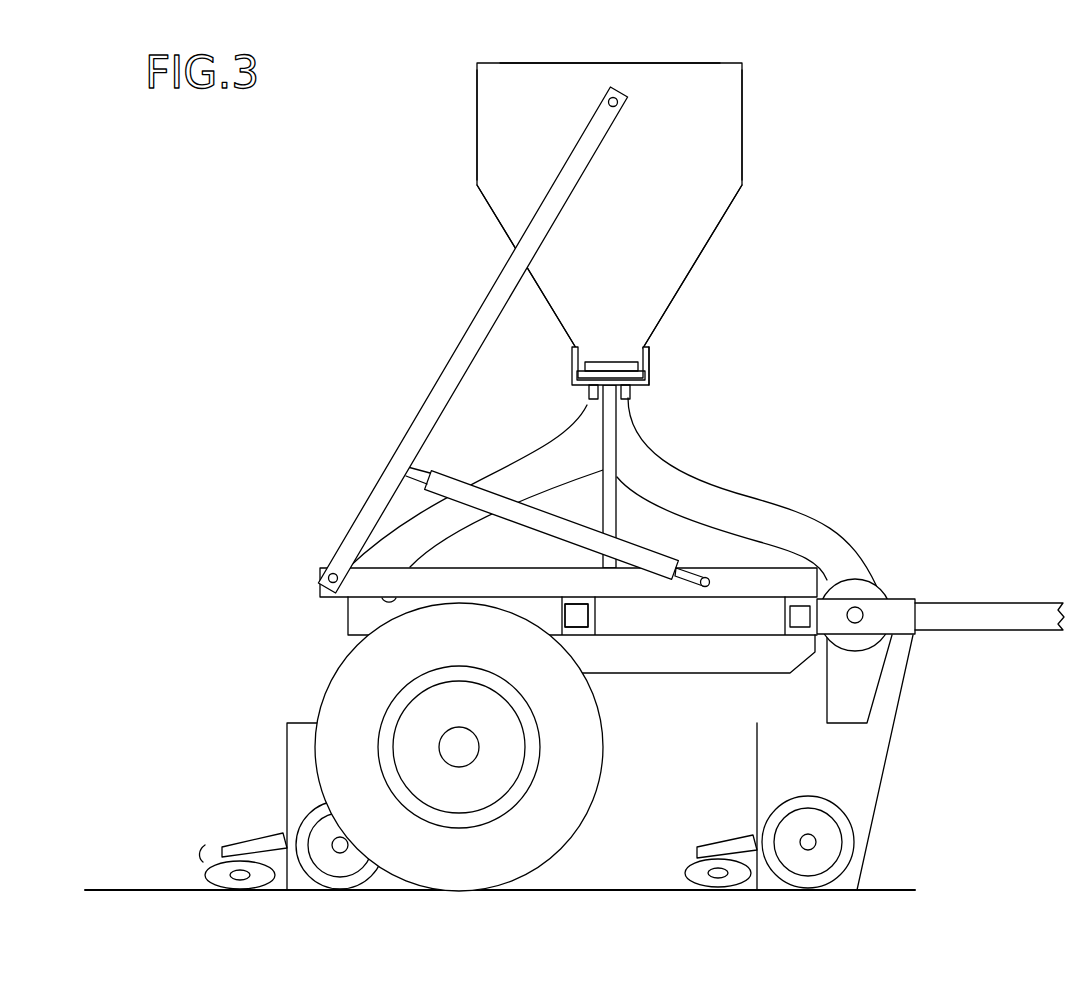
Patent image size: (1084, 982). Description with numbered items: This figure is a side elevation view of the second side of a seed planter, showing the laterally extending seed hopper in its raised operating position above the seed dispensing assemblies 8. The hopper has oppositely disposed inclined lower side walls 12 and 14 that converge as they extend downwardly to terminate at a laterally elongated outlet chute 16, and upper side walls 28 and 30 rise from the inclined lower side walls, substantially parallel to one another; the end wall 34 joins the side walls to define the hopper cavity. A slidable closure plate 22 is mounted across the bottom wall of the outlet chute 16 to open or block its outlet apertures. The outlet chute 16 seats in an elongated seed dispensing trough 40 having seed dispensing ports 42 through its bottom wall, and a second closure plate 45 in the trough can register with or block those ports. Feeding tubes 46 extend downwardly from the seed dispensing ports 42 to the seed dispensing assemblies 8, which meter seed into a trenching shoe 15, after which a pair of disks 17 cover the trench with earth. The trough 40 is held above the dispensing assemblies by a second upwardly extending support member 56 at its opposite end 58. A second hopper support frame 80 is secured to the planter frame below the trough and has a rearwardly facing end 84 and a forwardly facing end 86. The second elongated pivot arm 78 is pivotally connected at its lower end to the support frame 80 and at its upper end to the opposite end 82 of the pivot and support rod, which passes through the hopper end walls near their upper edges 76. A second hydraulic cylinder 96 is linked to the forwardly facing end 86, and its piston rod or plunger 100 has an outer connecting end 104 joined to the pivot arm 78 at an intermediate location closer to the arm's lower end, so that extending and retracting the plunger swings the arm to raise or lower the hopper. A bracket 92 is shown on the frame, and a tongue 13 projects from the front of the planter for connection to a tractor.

The seed dispensing assemblies 8 is at (880, 592).
The inclined lower side wall 12 is at (690, 275).
The tongue 13 is at (980, 632).
The inclined lower side wall 14 is at (490, 222).
The trenching shoe 15 is at (287, 778).
The outlet chute 16 is at (572, 351).
The disks 17 is at (218, 848).
The closure plate 22 is at (610, 347).
The upper side wall 28 is at (742, 131).
The upper side wall 30 is at (477, 126).
The end wall 34 is at (712, 207).
The seed dispensing trough 40 is at (650, 360).
The seed dispensing ports 42 is at (589, 393).
The closure plate 45 is at (630, 395).
The feeding tubes 46 is at (748, 497).
The second upwardly extending support member 56 is at (616, 522).
The opposite end 58 is at (645, 378).
The upper edges 76 is at (693, 63).
The second elongated pivot arm 78 is at (458, 357).
The second hopper support frame 80 is at (515, 598).
The opposite end of pivot and support rod 82 is at (618, 101).
The rearwardly facing end 84 is at (318, 585).
The forwardly facing end 86 is at (843, 580).
The frame bracket 92 is at (679, 588).
The second hydraulic cylinder 96 is at (532, 528).
The piston rod or plunger 100 is at (428, 477).
The outer connecting end 104 is at (391, 466).